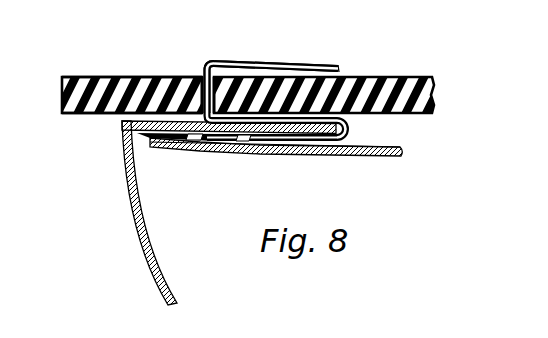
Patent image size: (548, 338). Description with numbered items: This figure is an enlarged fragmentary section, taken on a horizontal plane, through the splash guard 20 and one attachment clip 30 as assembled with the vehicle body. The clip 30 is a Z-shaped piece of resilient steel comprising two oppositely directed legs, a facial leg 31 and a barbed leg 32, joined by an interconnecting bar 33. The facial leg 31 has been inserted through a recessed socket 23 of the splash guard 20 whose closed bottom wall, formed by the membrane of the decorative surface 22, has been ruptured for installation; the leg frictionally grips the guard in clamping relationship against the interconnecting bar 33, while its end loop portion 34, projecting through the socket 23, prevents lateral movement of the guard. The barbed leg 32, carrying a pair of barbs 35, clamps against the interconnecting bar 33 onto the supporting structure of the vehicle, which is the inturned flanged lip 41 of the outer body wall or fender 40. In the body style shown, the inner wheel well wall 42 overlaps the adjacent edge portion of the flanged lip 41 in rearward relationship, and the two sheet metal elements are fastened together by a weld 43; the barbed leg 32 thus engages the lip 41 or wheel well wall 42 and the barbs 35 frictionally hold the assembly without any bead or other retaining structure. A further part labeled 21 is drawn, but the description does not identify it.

The splash guard 20 is at (386, 77).
The outer surface of panel 21 is at (99, 76).
The decorative surface 22 is at (100, 114).
The recessed socket 23 is at (205, 76).
The attachment clip 30 is at (300, 63).
The facial leg 31 is at (257, 63).
The barbed leg 32 is at (297, 139).
The interconnecting bar 33 is at (278, 121).
The end loop portion 34 is at (205, 72).
The barbs 35 is at (237, 141).
The outer body wall or fender 40 is at (213, 213).
The flanged lip 41 is at (204, 141).
The inner wheel well wall 42 is at (345, 153).
The weld 43 is at (145, 142).